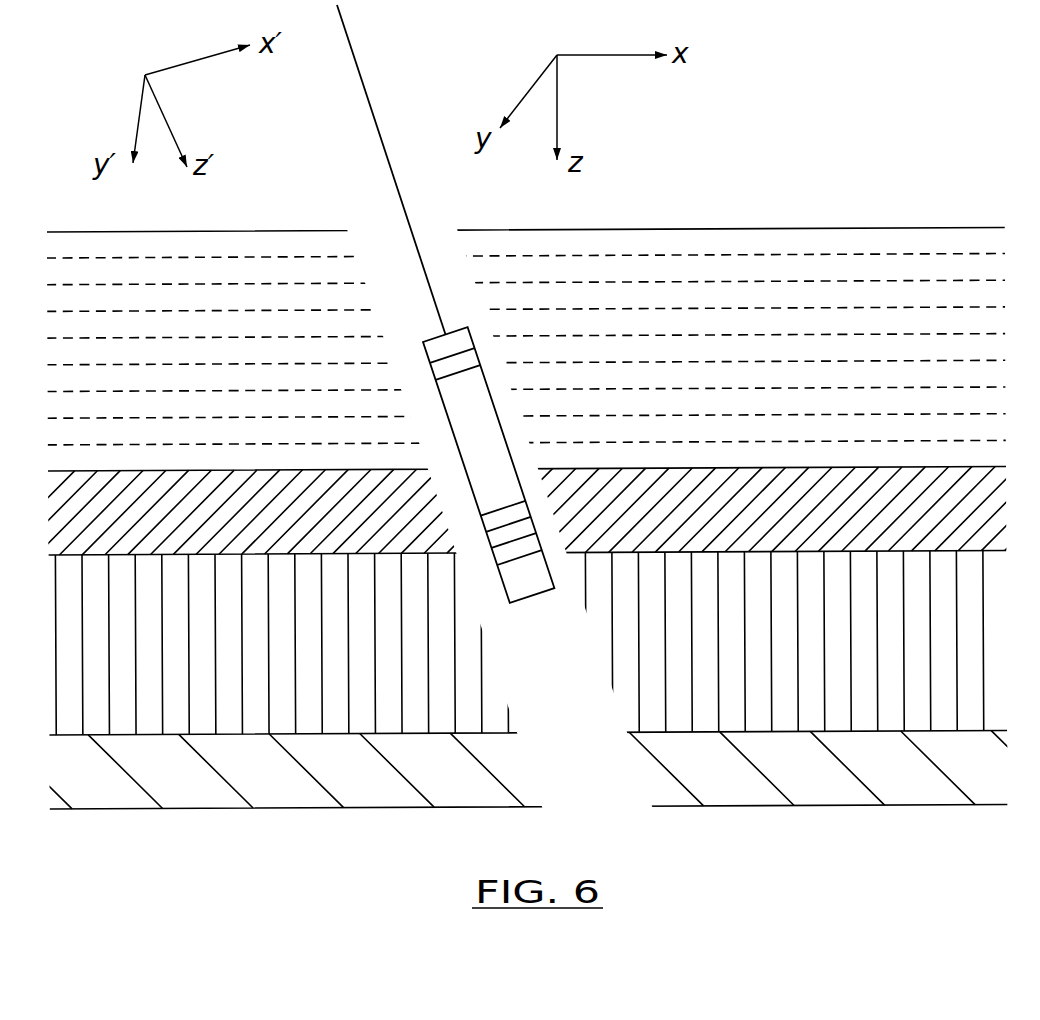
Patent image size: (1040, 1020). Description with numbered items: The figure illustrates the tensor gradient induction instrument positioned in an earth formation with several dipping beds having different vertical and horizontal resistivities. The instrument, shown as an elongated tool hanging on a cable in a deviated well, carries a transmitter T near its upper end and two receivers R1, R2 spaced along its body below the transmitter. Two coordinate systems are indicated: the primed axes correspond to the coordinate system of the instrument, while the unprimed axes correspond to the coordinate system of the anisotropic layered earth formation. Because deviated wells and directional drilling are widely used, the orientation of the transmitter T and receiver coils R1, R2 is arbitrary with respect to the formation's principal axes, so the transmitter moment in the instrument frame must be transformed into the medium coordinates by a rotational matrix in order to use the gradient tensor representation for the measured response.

The transmitter T is at (455, 332).
The receiver R1 is at (488, 465).
The receiver R2 is at (521, 570).